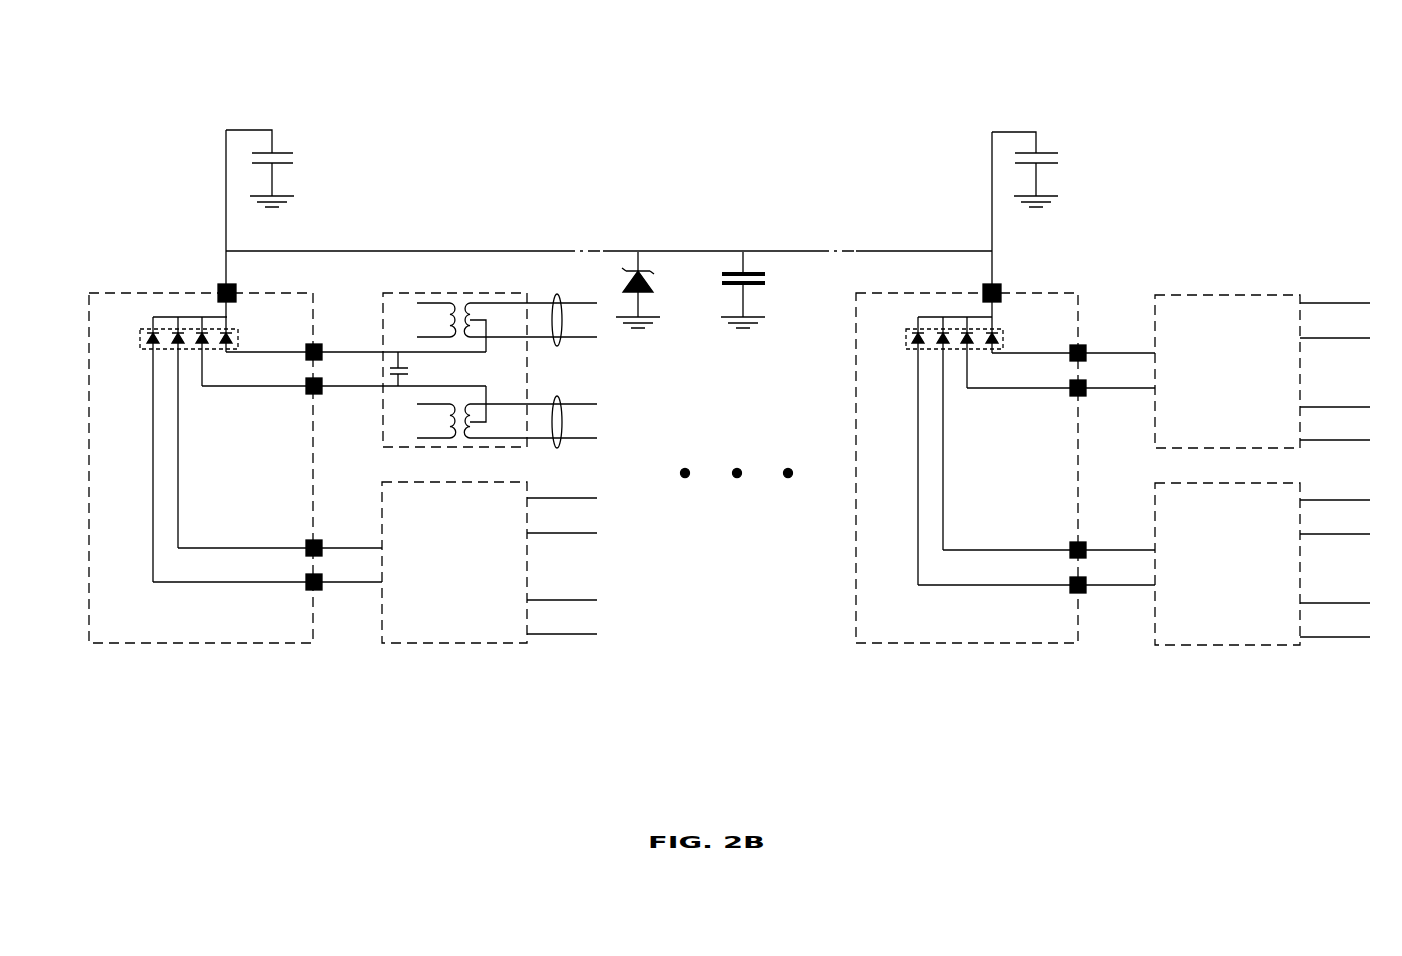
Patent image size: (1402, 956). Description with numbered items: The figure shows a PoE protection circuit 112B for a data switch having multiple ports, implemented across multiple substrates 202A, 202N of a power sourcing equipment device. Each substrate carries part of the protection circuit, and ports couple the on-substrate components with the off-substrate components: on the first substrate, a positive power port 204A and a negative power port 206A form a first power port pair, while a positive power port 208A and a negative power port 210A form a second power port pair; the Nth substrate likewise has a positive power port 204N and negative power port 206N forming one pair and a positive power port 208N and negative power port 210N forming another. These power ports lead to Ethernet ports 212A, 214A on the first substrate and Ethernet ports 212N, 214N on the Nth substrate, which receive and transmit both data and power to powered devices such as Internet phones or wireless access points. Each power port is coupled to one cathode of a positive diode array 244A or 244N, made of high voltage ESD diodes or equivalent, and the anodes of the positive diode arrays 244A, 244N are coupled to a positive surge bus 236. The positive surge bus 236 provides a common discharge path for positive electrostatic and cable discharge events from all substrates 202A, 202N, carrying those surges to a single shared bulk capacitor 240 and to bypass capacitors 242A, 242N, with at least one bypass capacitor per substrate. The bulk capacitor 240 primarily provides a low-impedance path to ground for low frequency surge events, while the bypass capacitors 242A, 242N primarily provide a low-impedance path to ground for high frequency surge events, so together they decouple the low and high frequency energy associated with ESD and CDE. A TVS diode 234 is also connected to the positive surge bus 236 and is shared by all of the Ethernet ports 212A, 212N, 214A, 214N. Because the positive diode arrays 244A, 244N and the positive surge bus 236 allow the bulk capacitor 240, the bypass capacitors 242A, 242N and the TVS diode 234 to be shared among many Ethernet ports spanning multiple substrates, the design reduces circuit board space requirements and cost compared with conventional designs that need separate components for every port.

The PoE protection circuit 112B is at (728, 64).
The substrate 202A is at (133, 293).
The substrate 202N is at (897, 293).
The positive power port 204A is at (306, 345).
The positive power port 204N is at (1070, 346).
The negative power port 206A is at (306, 395).
The negative power port 206N is at (1070, 397).
The positive power port 208A is at (306, 540).
The positive power port 208N is at (1070, 542).
The negative power port 210A is at (306, 591).
The negative power port 210N is at (1070, 594).
The Ethernet port 212A is at (527, 447).
The Ethernet port 212N is at (1300, 448).
The Ethernet port 214A is at (527, 643).
The Ethernet port 214N is at (1300, 645).
The TVS diode 234 is at (650, 283).
The positive surge bus 236 is at (697, 252).
The bulk capacitor 240 is at (767, 281).
The bypass capacitor 242A is at (297, 156).
The bypass capacitor 242N is at (1061, 156).
The positive diode array 244A is at (140, 349).
The positive diode array 244N is at (906, 349).